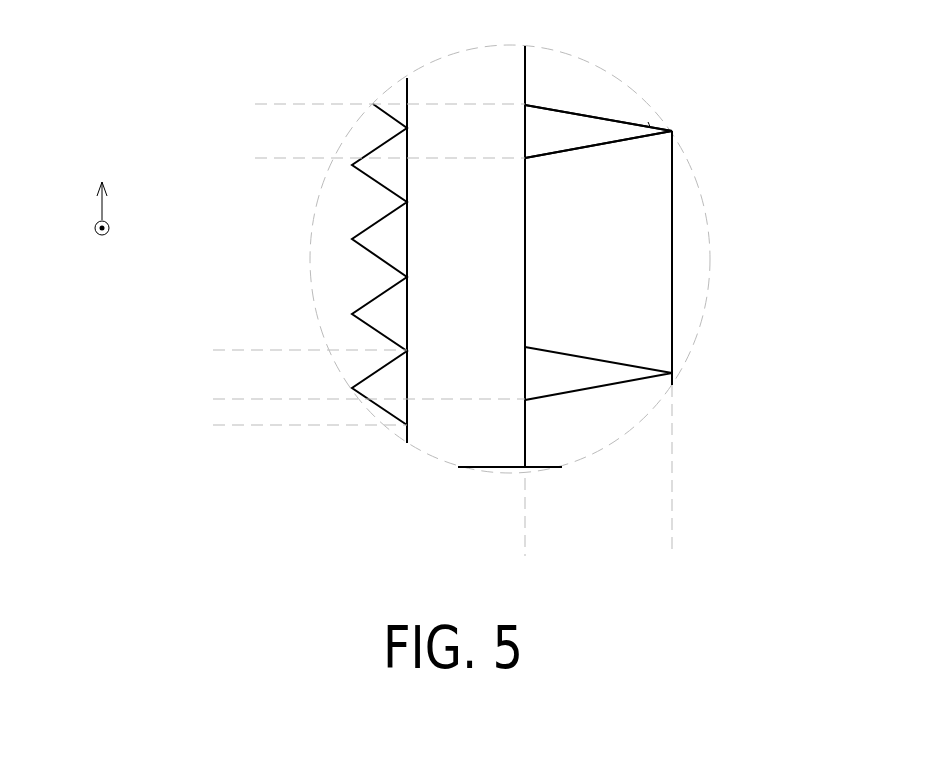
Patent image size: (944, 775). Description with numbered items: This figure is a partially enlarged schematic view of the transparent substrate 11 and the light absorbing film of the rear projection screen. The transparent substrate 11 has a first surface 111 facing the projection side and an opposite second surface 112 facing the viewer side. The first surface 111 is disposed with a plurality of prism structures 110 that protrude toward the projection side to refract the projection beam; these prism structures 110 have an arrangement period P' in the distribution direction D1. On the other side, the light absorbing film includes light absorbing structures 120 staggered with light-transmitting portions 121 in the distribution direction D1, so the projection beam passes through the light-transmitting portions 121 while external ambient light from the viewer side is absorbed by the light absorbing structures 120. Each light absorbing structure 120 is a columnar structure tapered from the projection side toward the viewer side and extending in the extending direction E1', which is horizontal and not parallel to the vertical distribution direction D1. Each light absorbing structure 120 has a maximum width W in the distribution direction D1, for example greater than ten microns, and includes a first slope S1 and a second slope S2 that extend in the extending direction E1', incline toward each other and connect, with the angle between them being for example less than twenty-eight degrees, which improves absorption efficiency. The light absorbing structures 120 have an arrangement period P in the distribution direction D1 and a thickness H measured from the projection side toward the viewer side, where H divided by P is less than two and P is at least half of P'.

The transparent substrate 11 is at (471, 322).
The prism structures 110 is at (392, 150).
The first surface 111 is at (410, 418).
The second surface 112 is at (522, 418).
The light absorbing structures 120 is at (562, 132).
The light-transmitting portions 121 is at (624, 267).
The first slope S1 is at (646, 121).
The second slope S2 is at (629, 142).
The maximum width W is at (259, 104).
The arrangement period P is at (369, 278).
The arrangement period P' is at (297, 387).
The thickness H is at (672, 550).
The distribution direction D1 is at (101, 182).
The extending direction E1' is at (130, 231).